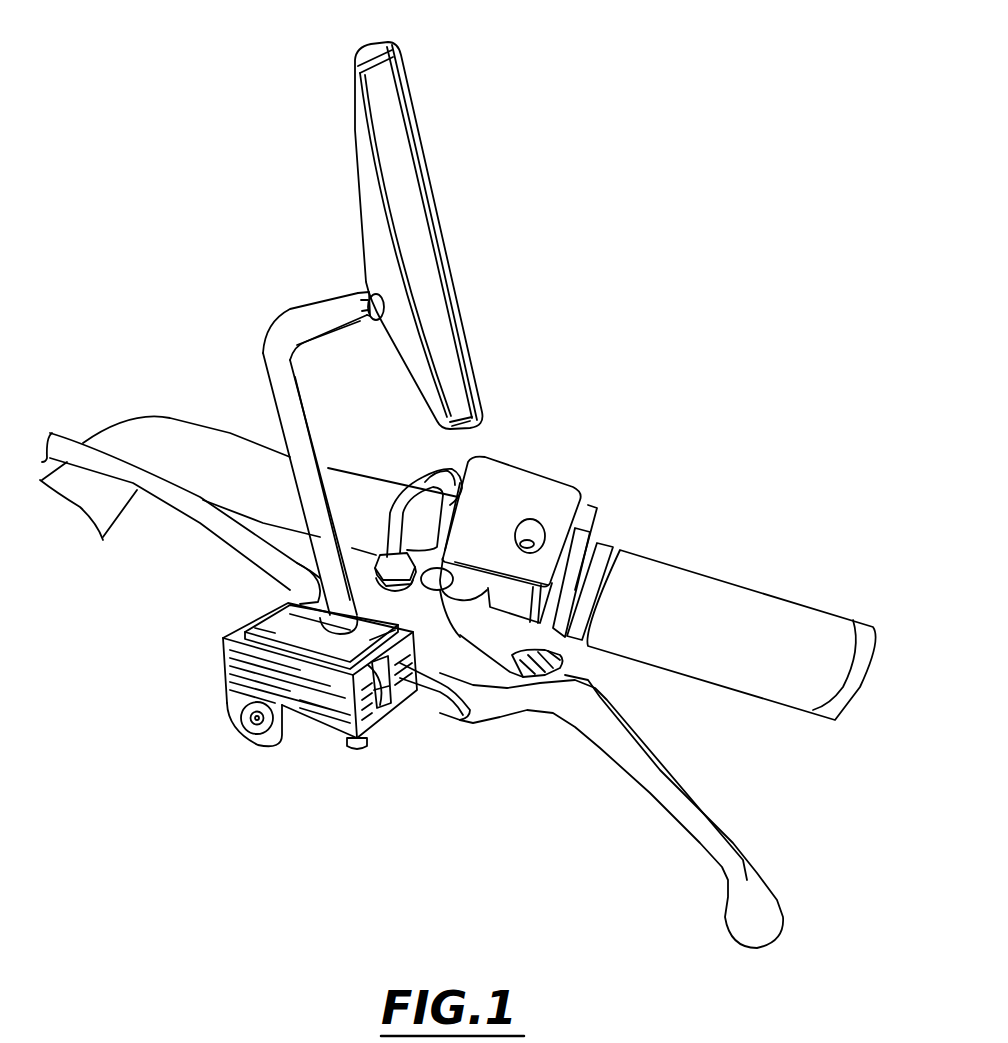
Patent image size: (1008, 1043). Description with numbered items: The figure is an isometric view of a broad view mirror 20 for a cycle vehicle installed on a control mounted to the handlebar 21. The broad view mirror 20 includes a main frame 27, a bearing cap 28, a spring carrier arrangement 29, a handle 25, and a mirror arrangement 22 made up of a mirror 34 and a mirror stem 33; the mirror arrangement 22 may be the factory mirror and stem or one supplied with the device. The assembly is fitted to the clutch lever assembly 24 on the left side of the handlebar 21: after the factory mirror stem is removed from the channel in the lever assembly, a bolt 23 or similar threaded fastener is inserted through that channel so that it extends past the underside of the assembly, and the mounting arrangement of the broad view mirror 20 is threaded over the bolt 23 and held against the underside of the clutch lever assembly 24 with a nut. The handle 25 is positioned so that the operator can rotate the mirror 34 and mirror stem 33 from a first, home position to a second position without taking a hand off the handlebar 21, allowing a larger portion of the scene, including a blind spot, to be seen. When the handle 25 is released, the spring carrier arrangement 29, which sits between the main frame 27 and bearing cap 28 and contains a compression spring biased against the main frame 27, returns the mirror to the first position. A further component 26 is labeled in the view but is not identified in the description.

The broad view mirror 20 is at (204, 250).
The handlebar 21 is at (733, 603).
The mirror arrangement 22 is at (351, 300).
The bolt 23 is at (391, 556).
The clutch lever assembly 24 is at (416, 614).
The handle 25 is at (565, 671).
The bolt 26 is at (367, 742).
The main frame 27 is at (243, 663).
The bearing cap 28 is at (313, 720).
The spring carrier arrangement 29 is at (381, 692).
The mirror stem 33 is at (268, 353).
The mirror 34 is at (378, 57).